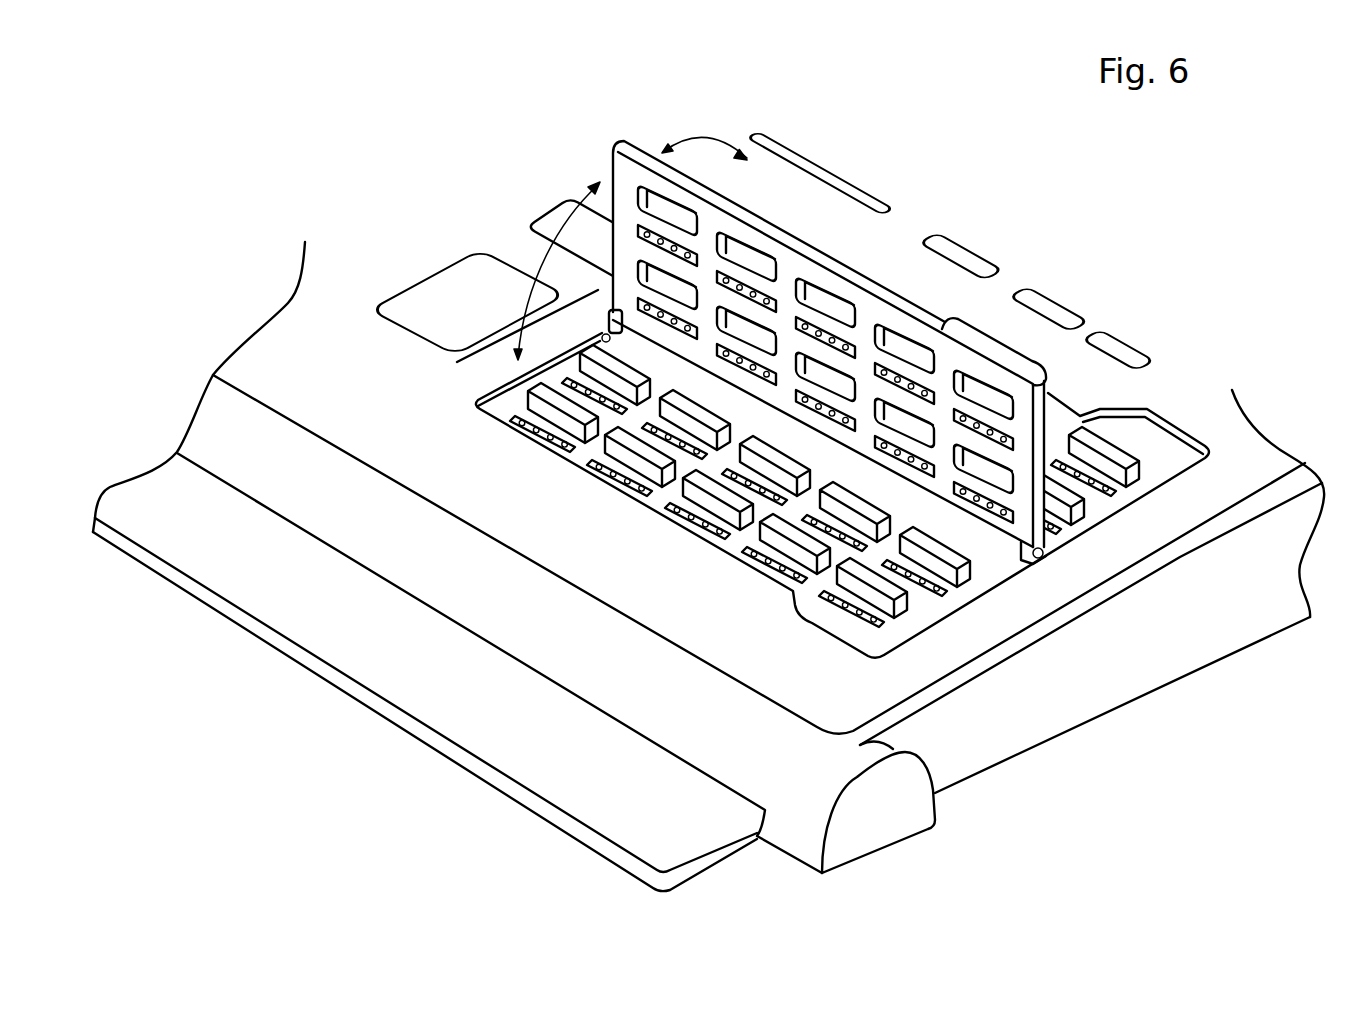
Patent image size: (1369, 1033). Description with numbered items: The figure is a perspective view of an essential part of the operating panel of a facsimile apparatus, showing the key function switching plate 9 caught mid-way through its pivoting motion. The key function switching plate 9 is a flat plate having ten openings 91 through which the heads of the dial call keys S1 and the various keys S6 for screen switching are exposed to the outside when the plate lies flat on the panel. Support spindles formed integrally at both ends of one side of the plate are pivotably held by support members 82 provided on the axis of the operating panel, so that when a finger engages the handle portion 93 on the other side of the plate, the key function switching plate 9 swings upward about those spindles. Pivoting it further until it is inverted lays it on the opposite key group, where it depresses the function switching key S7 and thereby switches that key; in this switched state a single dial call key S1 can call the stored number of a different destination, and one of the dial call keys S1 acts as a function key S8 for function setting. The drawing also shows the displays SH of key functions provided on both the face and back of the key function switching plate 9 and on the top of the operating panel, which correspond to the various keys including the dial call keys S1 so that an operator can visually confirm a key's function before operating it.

The key function switching plate 9 is at (881, 410).
The openings 91 is at (746, 330).
The handle portion 93 is at (997, 337).
The support members 82 is at (1047, 553).
The displays of key functions SH is at (845, 332).
The dial call keys S1 is at (1080, 505).
The keys for screen switching S6 is at (1112, 450).
The function switching key S7 is at (598, 325).
The function key S8 is at (965, 575).